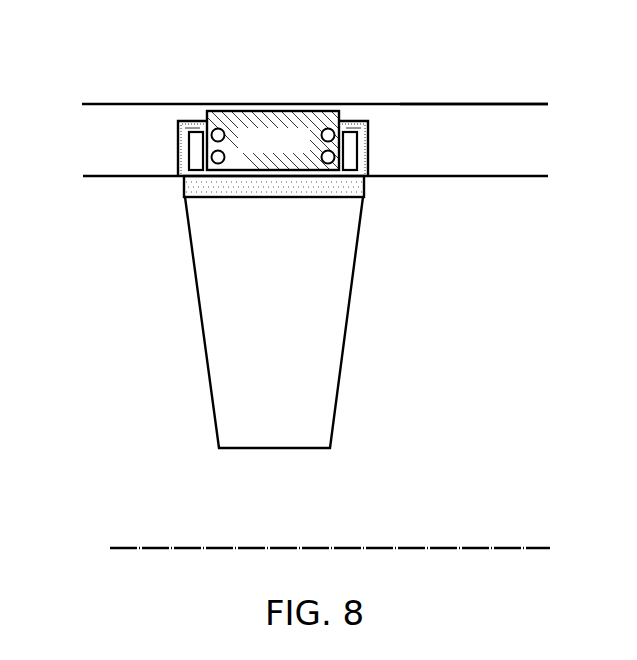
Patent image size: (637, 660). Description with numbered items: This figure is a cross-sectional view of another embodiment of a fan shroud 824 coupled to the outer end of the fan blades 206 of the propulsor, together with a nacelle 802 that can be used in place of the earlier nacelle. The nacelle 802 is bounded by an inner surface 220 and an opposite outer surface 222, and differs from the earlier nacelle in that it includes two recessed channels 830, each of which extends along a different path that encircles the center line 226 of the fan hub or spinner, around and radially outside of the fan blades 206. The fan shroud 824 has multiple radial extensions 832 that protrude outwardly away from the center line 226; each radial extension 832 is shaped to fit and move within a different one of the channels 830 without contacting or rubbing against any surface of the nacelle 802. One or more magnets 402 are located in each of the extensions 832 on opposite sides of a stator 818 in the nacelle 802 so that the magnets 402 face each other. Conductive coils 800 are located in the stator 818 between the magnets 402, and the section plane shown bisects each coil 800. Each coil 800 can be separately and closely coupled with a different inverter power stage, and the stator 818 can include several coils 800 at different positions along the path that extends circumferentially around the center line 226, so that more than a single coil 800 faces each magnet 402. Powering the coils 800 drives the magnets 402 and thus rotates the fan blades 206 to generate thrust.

The outer surface 222 is at (150, 98).
The inner surface 220 is at (121, 181).
The nacelle 802 is at (495, 122).
The stator 818 is at (268, 110).
The recessed channels 830 is at (178, 124).
The conductive coils 800 is at (192, 137).
The radial extensions 832 is at (192, 128).
The fan shroud 824 is at (378, 193).
The magnets 402 is at (341, 187).
The fan blades 206 is at (358, 320).
The center line 226 is at (448, 545).